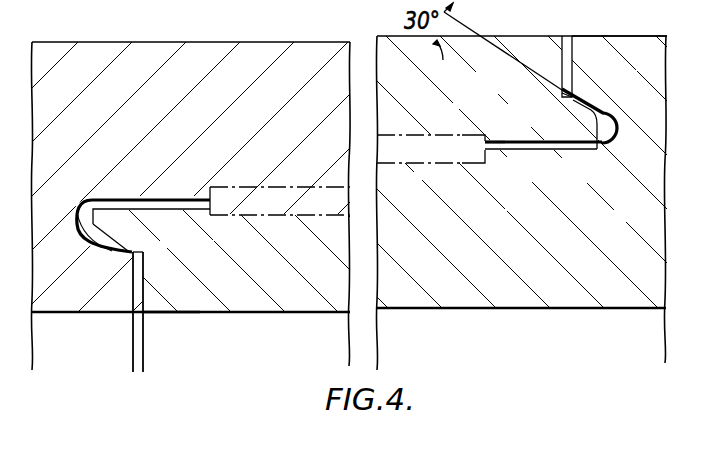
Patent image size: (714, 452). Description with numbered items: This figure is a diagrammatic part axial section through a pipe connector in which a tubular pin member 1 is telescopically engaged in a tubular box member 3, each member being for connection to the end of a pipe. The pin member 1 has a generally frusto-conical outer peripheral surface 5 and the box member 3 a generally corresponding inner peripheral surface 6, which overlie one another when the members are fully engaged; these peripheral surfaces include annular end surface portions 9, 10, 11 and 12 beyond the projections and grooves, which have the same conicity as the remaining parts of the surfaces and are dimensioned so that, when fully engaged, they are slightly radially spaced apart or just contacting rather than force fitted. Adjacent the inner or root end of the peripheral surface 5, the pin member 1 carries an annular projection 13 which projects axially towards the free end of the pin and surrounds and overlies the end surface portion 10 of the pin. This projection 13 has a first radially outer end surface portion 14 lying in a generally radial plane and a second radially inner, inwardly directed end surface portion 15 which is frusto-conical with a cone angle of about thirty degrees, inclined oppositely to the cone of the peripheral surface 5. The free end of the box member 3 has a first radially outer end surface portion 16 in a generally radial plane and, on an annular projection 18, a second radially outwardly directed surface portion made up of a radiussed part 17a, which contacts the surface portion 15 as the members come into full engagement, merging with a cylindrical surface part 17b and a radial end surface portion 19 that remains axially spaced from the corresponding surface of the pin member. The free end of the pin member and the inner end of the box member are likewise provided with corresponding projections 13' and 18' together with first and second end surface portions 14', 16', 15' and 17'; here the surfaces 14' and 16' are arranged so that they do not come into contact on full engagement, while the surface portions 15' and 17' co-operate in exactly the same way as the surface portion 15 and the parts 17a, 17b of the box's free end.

The tubular pin member 1 is at (622, 235).
The tubular box member 3 is at (418, 98).
The outer peripheral surface 5 is at (442, 158).
The inner peripheral surface 6 is at (393, 142).
The annular end surface portion 9 is at (207, 213).
The annular end surface portion 10 is at (497, 156).
The annular end surface portion 11 is at (173, 199).
The annular end surface portion 12 is at (503, 140).
The annular projection 13 is at (619, 36).
The first radially outer end surface portion 14 is at (583, 50).
The second radially inner end surface portion 15 is at (617, 106).
The first radially outer end surface portion 16 is at (547, 50).
The radiussed part 17a is at (552, 141).
The cylindrical surface part 17b is at (568, 101).
The annular projection 18 is at (576, 143).
The radial end surface portion 19 is at (595, 138).
The projection 13' is at (191, 206).
The first end surface portion 14' is at (119, 312).
The second end surface portion 15' is at (77, 240).
The first end surface portion 16' is at (171, 324).
The second end surface portion 17' is at (135, 226).
The projection 18' is at (151, 190).